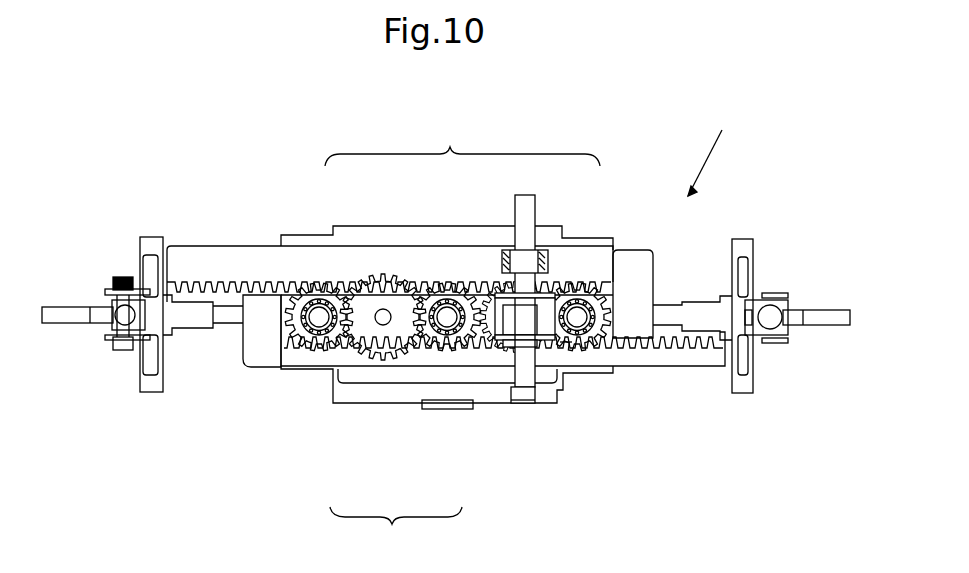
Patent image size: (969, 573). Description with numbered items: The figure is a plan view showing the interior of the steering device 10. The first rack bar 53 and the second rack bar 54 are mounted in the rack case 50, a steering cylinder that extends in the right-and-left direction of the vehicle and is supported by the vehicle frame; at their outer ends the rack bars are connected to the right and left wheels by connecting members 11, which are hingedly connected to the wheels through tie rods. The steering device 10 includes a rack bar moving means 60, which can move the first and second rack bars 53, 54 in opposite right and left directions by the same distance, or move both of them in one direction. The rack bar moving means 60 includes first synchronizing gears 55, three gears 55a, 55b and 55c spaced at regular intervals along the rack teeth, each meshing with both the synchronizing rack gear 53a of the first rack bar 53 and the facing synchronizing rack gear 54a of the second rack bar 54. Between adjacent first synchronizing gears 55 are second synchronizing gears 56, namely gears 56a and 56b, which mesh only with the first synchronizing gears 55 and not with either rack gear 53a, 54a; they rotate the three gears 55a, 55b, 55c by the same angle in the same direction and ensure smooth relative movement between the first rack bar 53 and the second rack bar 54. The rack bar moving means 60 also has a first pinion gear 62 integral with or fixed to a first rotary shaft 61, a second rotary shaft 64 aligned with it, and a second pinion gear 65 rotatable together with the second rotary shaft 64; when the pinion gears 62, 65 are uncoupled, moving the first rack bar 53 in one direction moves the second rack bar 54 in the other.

The steering device 10 is at (742, 149).
The connecting member 11 is at (80, 315).
The rack case 50 is at (333, 403).
The first rack bar 53 is at (212, 263).
The synchronizing rack gear 53a is at (206, 296).
The second rack bar 54 is at (707, 357).
The synchronizing rack gear 54a is at (660, 340).
The first synchronizing gears 55 is at (462, 142).
The gear 55a is at (323, 317).
The gear 55b is at (446, 316).
The gear 55c is at (578, 316).
The second synchronizing gears 56 is at (396, 528).
The gear 56a is at (392, 340).
The gear 56b is at (488, 340).
The rack bar moving means 60 is at (552, 360).
The first rotary shaft 61 is at (523, 217).
The first pinion gear 62 is at (527, 265).
The second rotary shaft 64 is at (578, 348).
The second pinion gear 65 is at (540, 395).